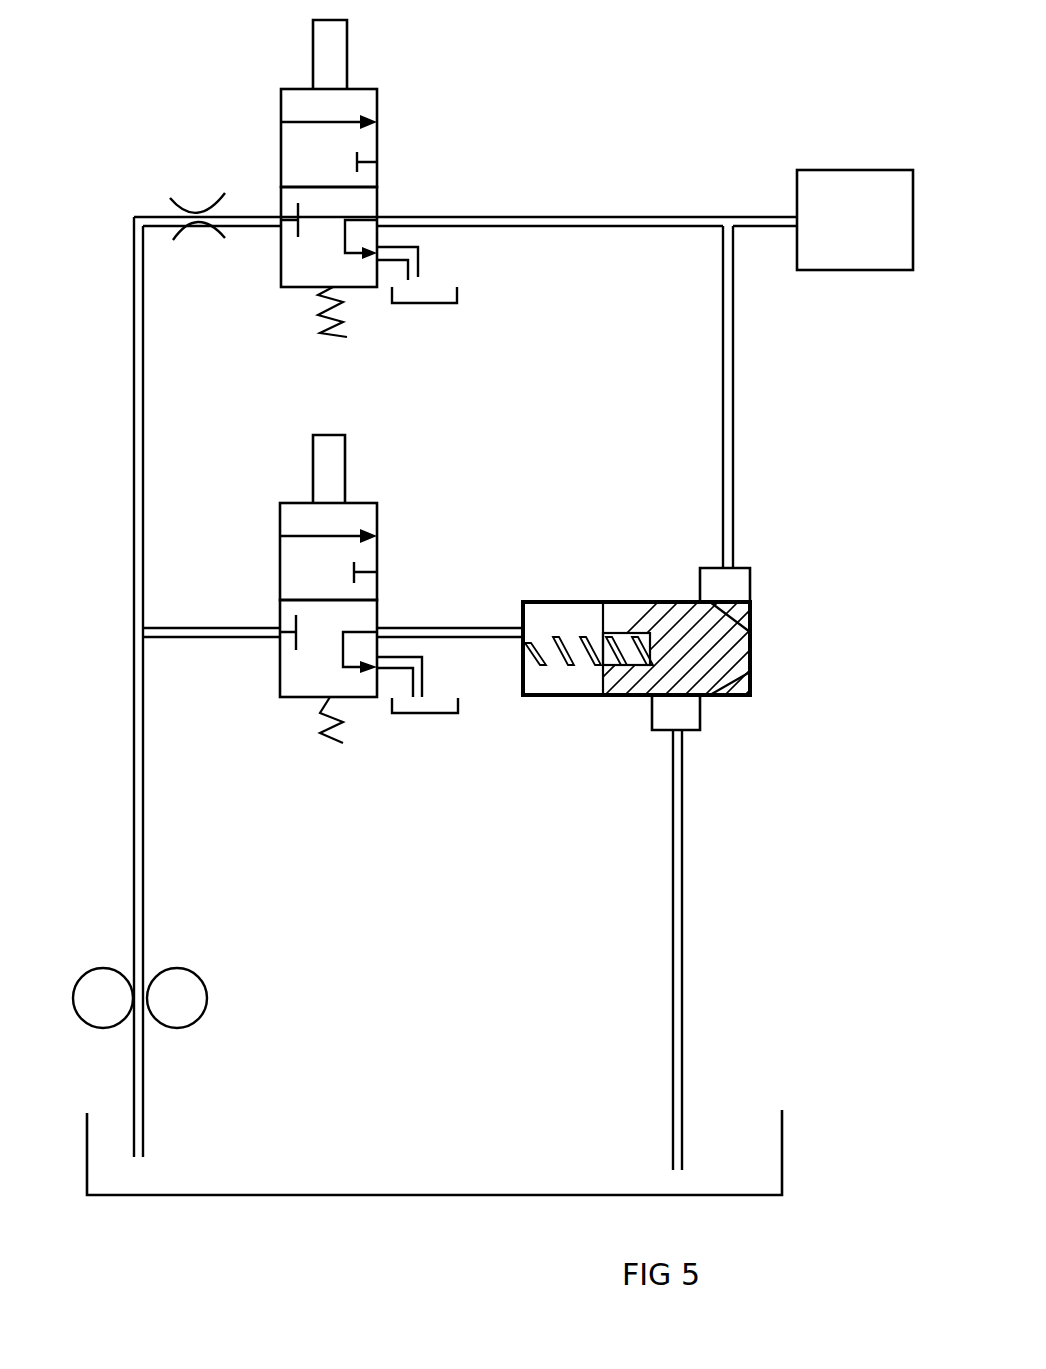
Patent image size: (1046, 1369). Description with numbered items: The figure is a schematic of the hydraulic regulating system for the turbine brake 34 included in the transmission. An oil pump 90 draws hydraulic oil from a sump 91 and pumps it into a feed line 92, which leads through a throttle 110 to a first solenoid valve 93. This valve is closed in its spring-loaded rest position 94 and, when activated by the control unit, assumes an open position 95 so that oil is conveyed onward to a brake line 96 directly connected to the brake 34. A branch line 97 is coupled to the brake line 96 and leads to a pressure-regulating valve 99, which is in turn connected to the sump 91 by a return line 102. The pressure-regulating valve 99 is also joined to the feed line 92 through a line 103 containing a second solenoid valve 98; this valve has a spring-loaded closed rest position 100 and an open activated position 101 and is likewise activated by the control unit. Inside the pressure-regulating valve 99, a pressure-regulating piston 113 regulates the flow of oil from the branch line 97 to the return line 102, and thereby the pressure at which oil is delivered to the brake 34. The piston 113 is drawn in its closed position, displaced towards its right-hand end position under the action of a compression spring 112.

The turbine brake 34 is at (850, 235).
The oil pump 90 is at (197, 970).
The sump 91 is at (447, 307).
The feed line 92 is at (143, 803).
The first solenoid valve 93 is at (304, 178).
The spring-loaded rest position 94 is at (293, 267).
The open position 95 is at (372, 103).
The brake line 96 is at (570, 217).
The branch line 97 is at (723, 283).
The second solenoid valve 98 is at (385, 590).
The pressure-regulating valve 99 is at (675, 652).
The spring-loaded closed rest position 100 is at (290, 677).
The open activated position 101 is at (314, 589).
The return line 102 is at (682, 768).
The line 103 is at (180, 628).
The throttle 110 is at (178, 200).
The compression spring 112 is at (558, 663).
The pressure-regulating piston 113 is at (628, 685).